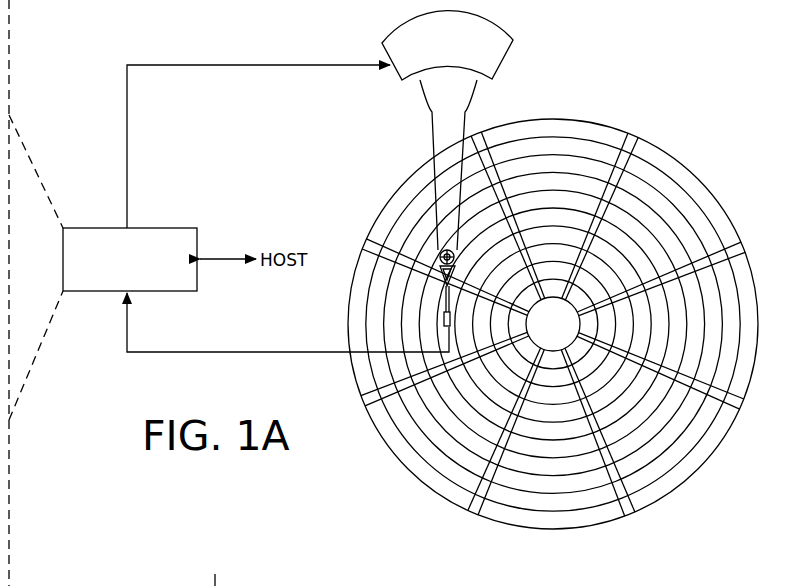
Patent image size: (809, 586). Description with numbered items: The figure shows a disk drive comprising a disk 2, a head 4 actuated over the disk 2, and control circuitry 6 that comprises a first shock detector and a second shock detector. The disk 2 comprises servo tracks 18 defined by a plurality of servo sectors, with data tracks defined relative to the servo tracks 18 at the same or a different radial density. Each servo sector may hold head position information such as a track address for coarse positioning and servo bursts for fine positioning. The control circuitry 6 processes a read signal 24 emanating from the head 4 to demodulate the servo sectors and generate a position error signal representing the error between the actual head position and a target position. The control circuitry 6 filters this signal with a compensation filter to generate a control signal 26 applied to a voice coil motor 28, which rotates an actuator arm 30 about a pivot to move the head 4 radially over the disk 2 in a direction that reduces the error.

The disk 2 is at (695, 165).
The head 4 is at (441, 329).
The control circuitry 6 is at (165, 228).
The servo tracks 18 is at (552, 148).
The read signal 24 is at (256, 352).
The control signal 26 is at (127, 136).
The voice coil motor 28 is at (398, 78).
The actuator arm 30 is at (432, 145).